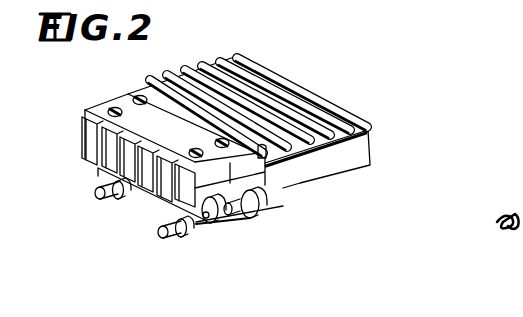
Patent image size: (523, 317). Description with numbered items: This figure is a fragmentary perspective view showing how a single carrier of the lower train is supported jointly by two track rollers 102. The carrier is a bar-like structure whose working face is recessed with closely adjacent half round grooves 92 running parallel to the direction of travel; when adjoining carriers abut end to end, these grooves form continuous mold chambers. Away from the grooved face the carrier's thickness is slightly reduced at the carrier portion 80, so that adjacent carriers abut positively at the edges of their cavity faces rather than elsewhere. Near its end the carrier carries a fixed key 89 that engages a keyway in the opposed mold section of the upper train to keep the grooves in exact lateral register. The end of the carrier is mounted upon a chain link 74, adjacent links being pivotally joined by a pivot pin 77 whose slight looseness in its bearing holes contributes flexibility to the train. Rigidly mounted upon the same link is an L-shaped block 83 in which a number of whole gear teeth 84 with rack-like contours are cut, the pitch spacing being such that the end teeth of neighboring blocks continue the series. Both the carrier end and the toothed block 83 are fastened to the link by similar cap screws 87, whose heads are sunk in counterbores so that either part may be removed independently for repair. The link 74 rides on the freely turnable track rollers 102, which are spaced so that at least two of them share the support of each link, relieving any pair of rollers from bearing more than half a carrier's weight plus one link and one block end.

The link 74 is at (262, 205).
The pivot pin 77 is at (238, 224).
The carrier portion 80 is at (343, 160).
The L-shaped block 83 is at (97, 112).
The gear teeth 84 is at (84, 126).
The cap screws 87 is at (139, 96).
The fixed key 89 is at (262, 158).
The half round grooves 92 is at (218, 66).
The track rollers 102 is at (131, 204).